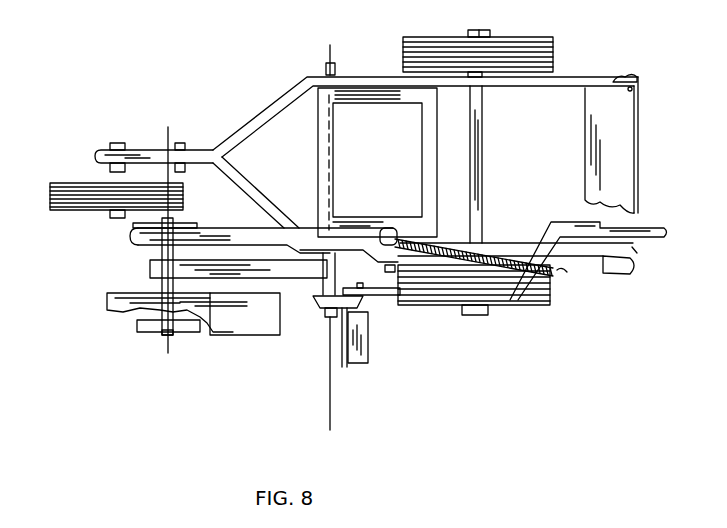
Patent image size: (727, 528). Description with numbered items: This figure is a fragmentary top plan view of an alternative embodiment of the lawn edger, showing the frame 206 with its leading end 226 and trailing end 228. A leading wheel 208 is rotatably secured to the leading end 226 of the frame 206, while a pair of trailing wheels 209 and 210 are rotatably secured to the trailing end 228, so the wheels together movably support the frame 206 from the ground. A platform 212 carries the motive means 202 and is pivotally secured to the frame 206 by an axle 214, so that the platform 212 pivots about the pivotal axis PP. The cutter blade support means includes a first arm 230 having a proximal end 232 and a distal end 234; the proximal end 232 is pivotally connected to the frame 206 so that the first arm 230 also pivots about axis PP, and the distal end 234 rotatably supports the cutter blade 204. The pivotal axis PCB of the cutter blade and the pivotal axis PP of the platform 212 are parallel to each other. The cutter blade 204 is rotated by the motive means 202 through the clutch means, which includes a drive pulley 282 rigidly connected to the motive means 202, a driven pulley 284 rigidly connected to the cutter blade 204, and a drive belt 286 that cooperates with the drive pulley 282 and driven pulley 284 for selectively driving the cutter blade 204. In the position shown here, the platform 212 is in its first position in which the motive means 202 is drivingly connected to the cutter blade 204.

The motive means 202 is at (392, 140).
The cutter blade 204 is at (137, 323).
The frame 206 is at (252, 195).
The leading wheel 208 is at (50, 188).
The trailing wheel 209 is at (550, 297).
The trailing wheel 210 is at (542, 44).
The platform 212 is at (398, 92).
The axle 214 is at (330, 335).
The leading end 226 is at (98, 150).
The trailing end 228 is at (613, 81).
The first arm 230 is at (268, 267).
The proximal end 232 is at (317, 270).
The distal end 234 is at (148, 270).
The drive pulley 282 is at (376, 248).
The driven pulley 284 is at (130, 225).
The drive belt 286 is at (227, 234).
The pivotal axis of the cutter blade PCB is at (167, 357).
The pivotal axis of the platform PP is at (332, 424).